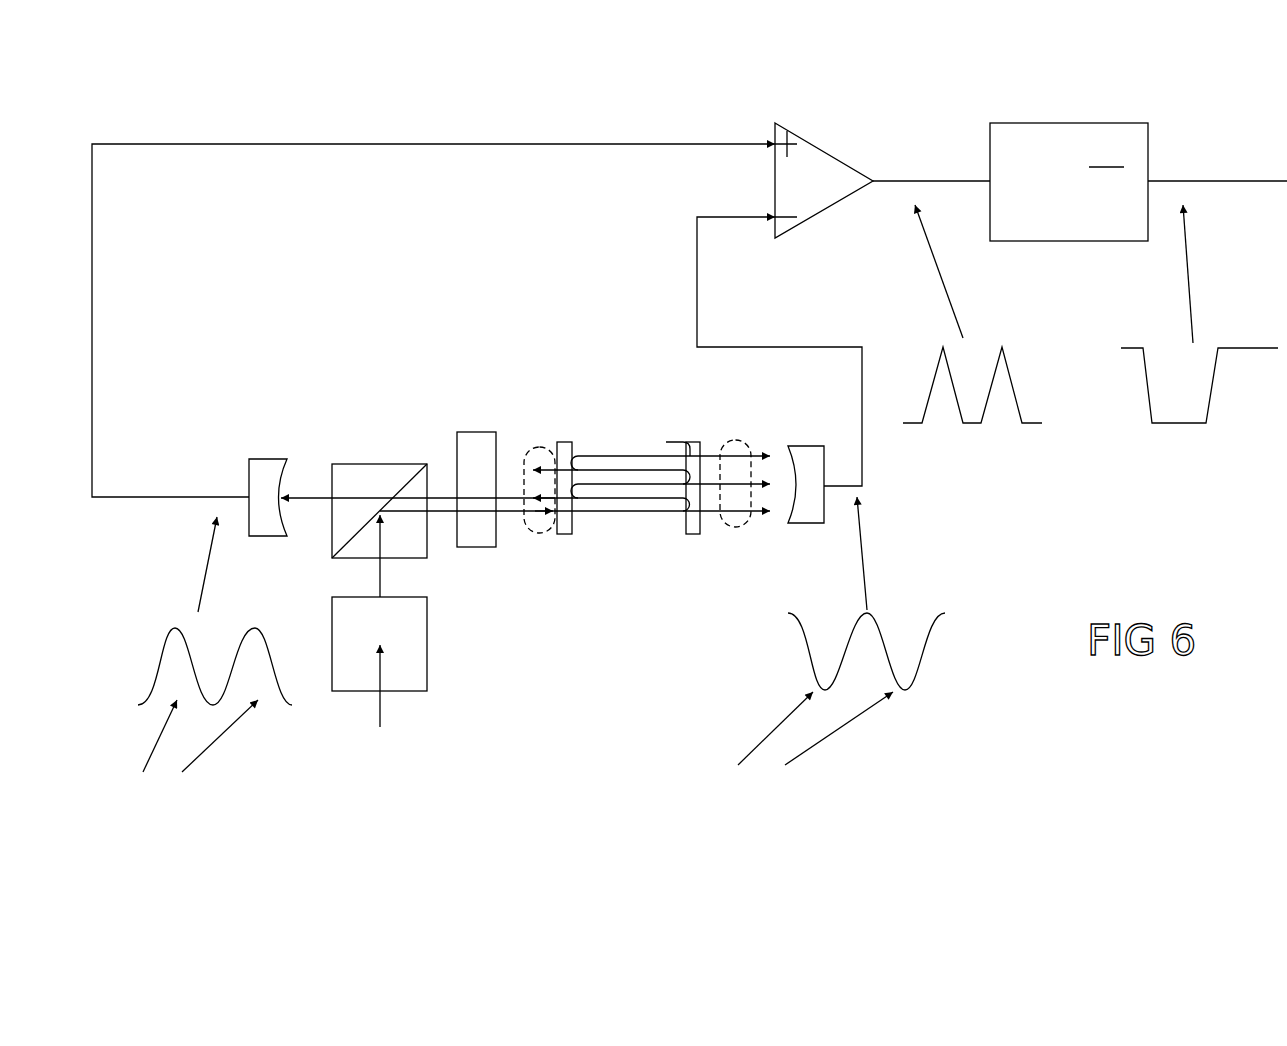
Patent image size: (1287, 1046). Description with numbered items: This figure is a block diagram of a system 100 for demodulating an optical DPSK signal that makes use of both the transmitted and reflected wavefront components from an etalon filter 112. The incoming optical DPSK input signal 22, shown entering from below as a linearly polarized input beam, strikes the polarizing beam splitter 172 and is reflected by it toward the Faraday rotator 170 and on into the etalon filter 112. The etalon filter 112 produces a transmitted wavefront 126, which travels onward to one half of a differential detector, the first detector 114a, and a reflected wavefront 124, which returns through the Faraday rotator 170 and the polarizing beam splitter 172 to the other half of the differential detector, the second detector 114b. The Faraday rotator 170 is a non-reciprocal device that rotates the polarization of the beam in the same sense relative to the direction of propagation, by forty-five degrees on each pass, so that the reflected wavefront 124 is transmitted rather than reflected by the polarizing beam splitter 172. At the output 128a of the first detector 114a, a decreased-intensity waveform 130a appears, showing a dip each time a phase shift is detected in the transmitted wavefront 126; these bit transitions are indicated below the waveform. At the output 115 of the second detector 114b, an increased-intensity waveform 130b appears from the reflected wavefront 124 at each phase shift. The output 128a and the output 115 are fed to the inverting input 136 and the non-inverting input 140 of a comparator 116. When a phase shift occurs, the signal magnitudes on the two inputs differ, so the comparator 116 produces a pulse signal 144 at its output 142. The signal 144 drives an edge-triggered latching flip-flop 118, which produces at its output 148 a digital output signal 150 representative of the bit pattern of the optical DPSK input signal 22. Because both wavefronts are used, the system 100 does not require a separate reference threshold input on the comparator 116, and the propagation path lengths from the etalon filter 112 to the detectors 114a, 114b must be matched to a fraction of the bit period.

The optical DPSK input signal 22 is at (380, 710).
The system 100 is at (885, 486).
The etalon filter 112 is at (557, 438).
The first detector 114a is at (811, 455).
The second detector 114b is at (267, 459).
The output of second detector 115 is at (249, 497).
The comparator 116 is at (818, 165).
The latching flip-flop 118 is at (1069, 182).
The reflected wavefront 124 is at (540, 533).
The transmitted wavefront 126 is at (731, 527).
The output of first detector 128a is at (826, 488).
The decreased-intensity waveform 130a is at (925, 670).
The increased-intensity waveform 130b is at (247, 627).
The inverting input 136 is at (775, 215).
The non-inverting input 140 is at (775, 142).
The comparator output 142 is at (873, 181).
The comparator output signal 144 is at (983, 410).
The flip-flop output 148 is at (1150, 178).
The digital output signal 150 is at (1213, 400).
The Faraday rotator 170 is at (478, 445).
The polarizing beam splitter 172 is at (398, 474).